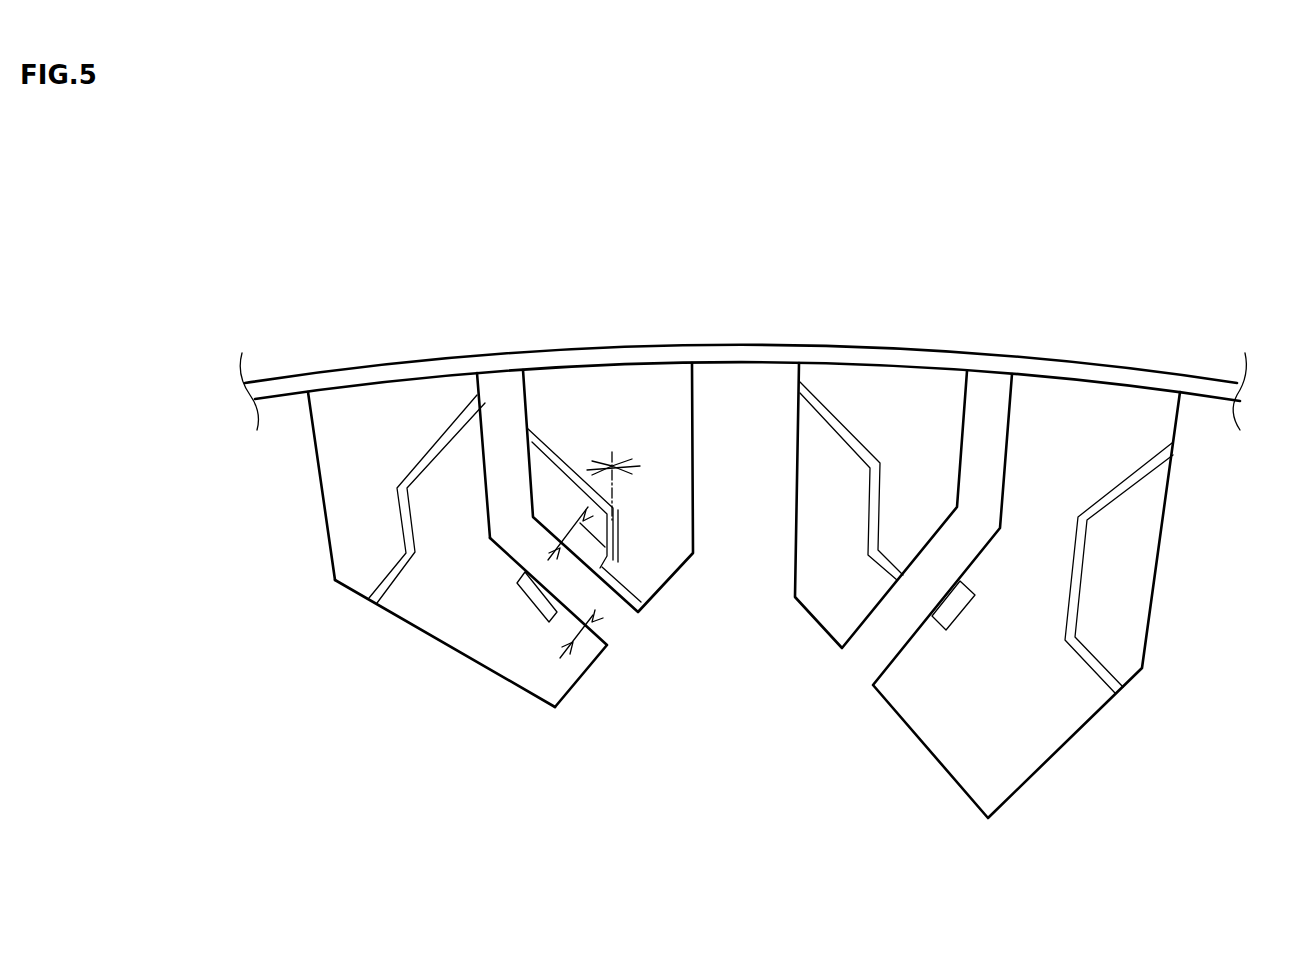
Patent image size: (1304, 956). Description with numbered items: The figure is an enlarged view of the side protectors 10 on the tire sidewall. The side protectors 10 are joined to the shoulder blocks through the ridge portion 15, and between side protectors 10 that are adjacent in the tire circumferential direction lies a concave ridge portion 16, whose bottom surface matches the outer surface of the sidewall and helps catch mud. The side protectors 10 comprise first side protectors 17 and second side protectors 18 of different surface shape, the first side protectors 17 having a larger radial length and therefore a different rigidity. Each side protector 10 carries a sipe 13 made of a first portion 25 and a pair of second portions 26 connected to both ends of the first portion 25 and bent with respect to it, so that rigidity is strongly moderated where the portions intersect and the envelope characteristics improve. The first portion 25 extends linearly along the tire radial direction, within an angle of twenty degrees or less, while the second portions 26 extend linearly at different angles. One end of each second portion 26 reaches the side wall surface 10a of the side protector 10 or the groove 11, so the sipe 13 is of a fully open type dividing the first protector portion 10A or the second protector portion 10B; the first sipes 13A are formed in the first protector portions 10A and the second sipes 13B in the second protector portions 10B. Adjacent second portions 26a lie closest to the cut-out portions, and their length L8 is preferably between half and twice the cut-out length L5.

The side protector 10 is at (410, 695).
The side wall surface 10a is at (393, 622).
The first protector portion 10A is at (553, 678).
The second protector portion 10B is at (627, 393).
The groove 11 is at (503, 410).
The sipe 13 is at (403, 530).
The first sipe 13A is at (388, 514).
The second sipe 13B is at (552, 440).
The ridge portion 15 is at (277, 388).
The concave ridge portion 16 is at (727, 548).
The first side protector 17 is at (1058, 290).
The second side protector 18 is at (412, 245).
The first portion 25 is at (412, 507).
The second portion 26 is at (572, 460).
The adjacent second portion 26a is at (603, 567).
The length of cut-out portion L5 is at (587, 640).
The length of adjacent second portion L8 is at (573, 537).